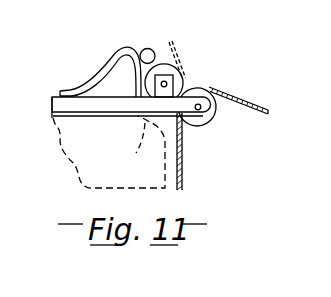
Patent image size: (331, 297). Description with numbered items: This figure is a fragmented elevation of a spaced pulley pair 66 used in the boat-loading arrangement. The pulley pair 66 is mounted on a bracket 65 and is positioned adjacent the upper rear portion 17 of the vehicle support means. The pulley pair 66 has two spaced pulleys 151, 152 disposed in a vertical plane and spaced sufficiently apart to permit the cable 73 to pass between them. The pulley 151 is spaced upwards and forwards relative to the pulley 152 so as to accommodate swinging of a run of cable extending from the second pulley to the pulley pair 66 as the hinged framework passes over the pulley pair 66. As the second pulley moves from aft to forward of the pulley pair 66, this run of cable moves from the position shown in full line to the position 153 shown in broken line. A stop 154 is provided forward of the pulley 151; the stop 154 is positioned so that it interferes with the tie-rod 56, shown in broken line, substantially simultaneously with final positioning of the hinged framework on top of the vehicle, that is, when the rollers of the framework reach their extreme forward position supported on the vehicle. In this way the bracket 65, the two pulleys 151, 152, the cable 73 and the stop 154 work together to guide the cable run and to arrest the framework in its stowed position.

The upper rear portion 17 is at (136, 147).
The tie-rod 56 is at (143, 49).
The bracket 65 is at (145, 100).
The pulley pair 66 is at (202, 52).
The cable 73 is at (189, 160).
The pulley 151 is at (184, 76).
The pulley 152 is at (193, 125).
The position of cable run 153 is at (186, 43).
The stop 154 is at (103, 69).